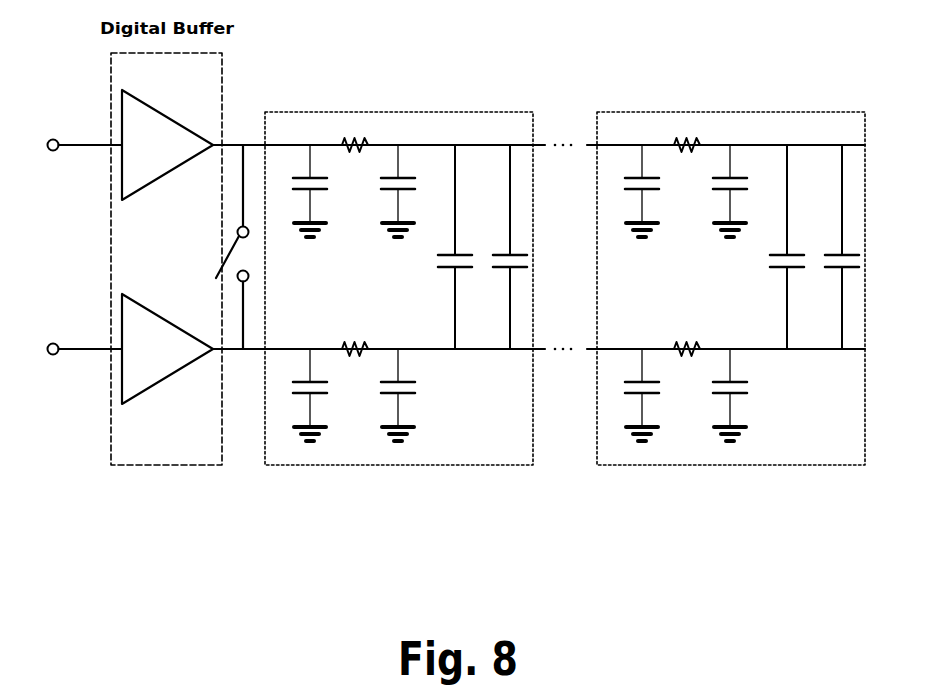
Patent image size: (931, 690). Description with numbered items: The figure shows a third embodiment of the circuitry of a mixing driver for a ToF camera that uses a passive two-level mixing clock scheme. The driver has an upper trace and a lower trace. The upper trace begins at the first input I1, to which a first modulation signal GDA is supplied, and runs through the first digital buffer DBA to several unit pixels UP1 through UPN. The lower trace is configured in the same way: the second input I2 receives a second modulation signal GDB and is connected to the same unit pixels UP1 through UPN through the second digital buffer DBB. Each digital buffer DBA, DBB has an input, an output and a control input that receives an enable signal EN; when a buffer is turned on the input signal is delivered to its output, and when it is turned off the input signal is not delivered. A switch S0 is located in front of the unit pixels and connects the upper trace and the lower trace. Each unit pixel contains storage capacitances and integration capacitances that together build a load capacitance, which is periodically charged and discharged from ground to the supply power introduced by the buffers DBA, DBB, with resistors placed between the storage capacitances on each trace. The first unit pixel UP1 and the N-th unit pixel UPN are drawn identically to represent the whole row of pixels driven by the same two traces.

The first input I1 is at (66, 145).
The second input I2 is at (66, 350).
The first modulation signal GDA is at (86, 132).
The second modulation signal GDB is at (86, 336).
The first digital buffer DBA is at (167, 145).
The second digital buffer DBB is at (167, 349).
The enable signal EN is at (167, 113).
The switch S0 is at (216, 247).
The first unit pixel UP1 is at (483, 112).
The N-th unit pixel UPN is at (761, 272).